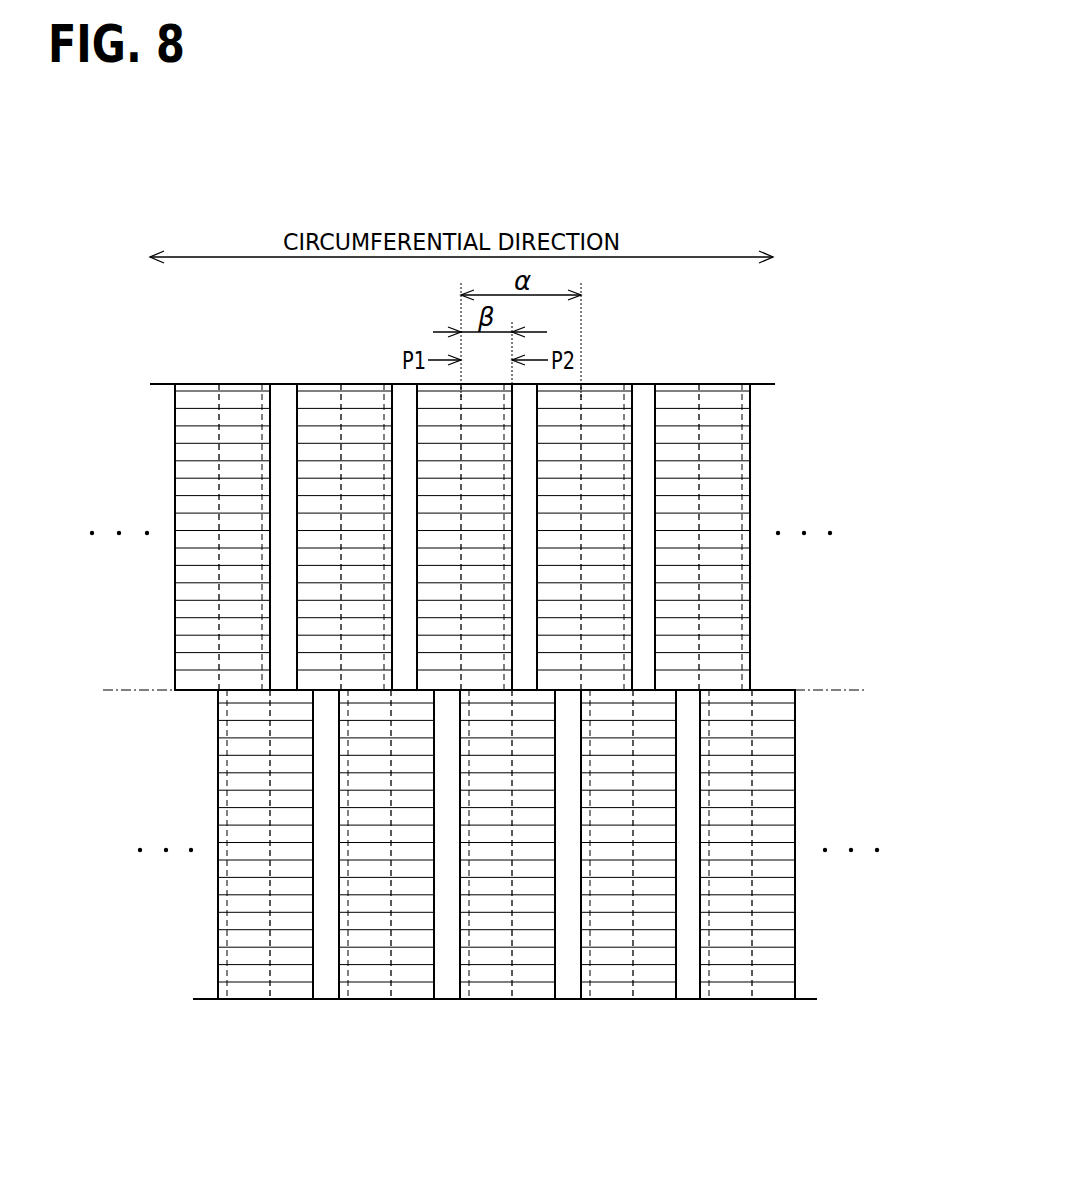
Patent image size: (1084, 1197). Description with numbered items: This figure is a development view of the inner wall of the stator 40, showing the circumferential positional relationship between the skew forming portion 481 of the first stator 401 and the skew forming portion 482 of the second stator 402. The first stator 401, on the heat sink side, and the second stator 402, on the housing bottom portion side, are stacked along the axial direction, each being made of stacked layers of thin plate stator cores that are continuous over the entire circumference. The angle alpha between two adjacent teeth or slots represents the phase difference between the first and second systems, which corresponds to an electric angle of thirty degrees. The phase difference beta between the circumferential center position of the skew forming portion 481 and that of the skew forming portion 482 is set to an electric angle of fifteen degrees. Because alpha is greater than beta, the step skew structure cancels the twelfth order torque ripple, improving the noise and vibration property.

The stator 40 is at (507, 691).
The first stator 401 is at (722, 600).
The second stator 402 is at (762, 752).
The skew forming portion 481 is at (197, 597).
The skew forming portion 482 is at (243, 768).